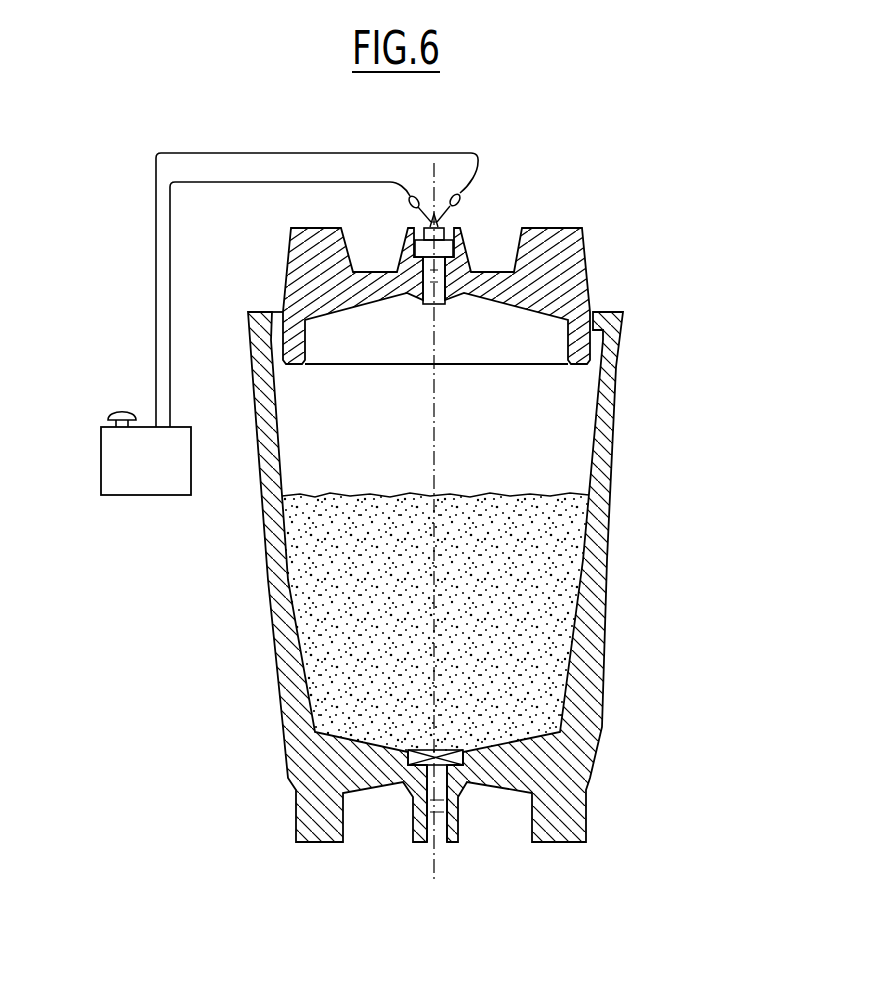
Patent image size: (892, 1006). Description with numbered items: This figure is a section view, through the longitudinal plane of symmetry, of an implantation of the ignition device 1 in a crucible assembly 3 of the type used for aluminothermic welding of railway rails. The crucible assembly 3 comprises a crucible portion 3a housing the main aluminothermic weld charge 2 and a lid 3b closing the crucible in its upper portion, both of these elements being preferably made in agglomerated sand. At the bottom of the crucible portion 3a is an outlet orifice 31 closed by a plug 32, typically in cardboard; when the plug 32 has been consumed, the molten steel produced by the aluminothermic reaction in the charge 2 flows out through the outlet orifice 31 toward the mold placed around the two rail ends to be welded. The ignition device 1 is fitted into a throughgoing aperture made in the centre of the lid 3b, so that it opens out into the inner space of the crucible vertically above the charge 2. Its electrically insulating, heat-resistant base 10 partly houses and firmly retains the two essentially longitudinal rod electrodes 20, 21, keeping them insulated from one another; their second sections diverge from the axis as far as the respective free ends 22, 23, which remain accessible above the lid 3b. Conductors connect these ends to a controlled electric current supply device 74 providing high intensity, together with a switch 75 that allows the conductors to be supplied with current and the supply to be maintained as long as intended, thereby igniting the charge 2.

The ignition device 1 is at (443, 256).
The aluminothermic weld charge 2 is at (318, 664).
The crucible assembly 3 is at (431, 535).
The crucible portion 3a is at (597, 623).
The lid 3b is at (290, 273).
The base 10 is at (453, 241).
The electrode 20 is at (444, 219).
The electrode 21 is at (414, 215).
The free end 22 is at (463, 194).
The free end 23 is at (400, 153).
The outlet orifice 31 is at (443, 843).
The plug 32 is at (418, 763).
The electric current supply device 74 is at (149, 478).
The switch 75 is at (118, 411).